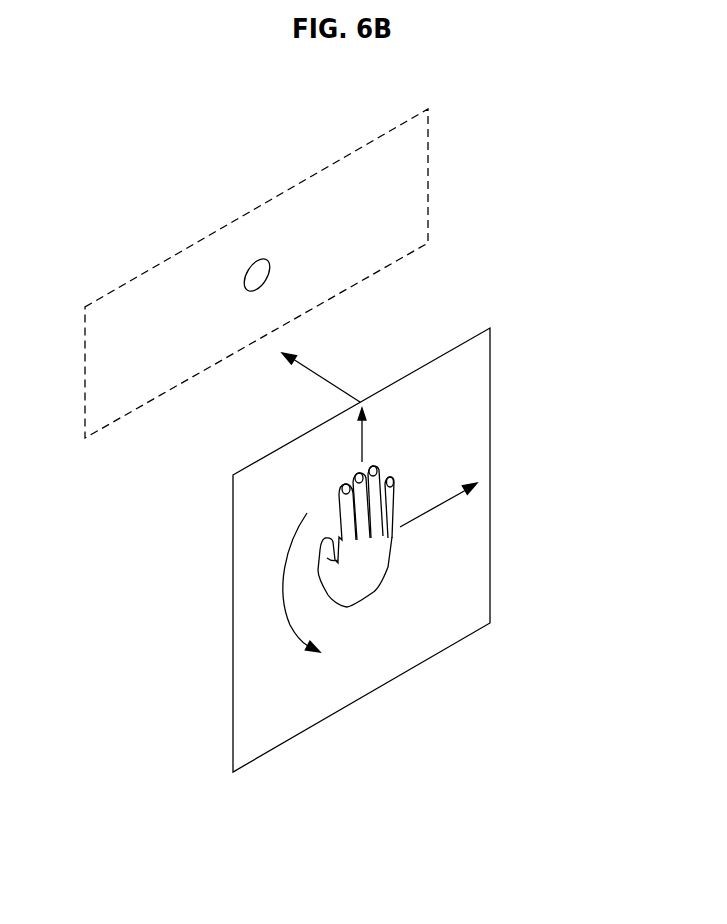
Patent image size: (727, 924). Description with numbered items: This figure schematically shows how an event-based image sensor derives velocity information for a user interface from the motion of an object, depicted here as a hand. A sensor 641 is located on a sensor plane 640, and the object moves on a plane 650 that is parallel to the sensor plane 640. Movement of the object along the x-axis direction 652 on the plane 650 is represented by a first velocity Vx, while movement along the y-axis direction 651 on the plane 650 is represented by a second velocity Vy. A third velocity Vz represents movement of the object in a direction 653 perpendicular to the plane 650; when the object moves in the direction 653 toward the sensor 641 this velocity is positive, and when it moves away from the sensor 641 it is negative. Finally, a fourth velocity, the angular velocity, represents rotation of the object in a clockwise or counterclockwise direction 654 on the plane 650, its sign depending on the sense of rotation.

The sensor plane 640 is at (345, 157).
The sensor 641 is at (253, 259).
The plane 650 is at (493, 327).
The y-axis direction 651 is at (363, 435).
The x-axis direction 652 is at (437, 507).
The direction perpendicular to the plane 653 is at (330, 378).
The clockwise or counterclockwise direction 654 is at (280, 594).